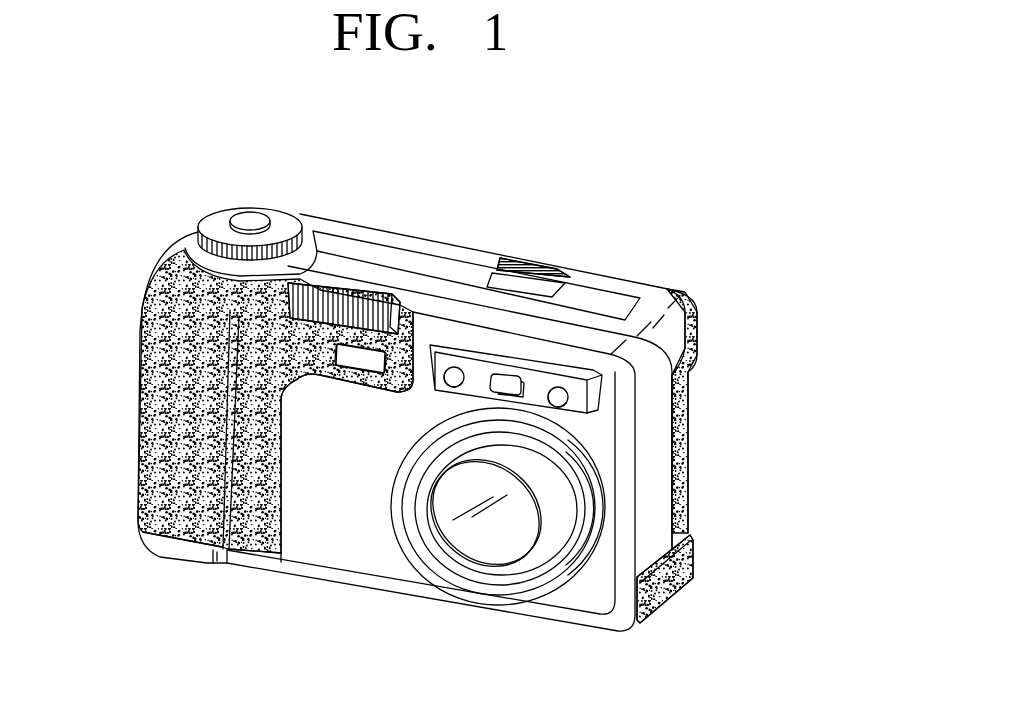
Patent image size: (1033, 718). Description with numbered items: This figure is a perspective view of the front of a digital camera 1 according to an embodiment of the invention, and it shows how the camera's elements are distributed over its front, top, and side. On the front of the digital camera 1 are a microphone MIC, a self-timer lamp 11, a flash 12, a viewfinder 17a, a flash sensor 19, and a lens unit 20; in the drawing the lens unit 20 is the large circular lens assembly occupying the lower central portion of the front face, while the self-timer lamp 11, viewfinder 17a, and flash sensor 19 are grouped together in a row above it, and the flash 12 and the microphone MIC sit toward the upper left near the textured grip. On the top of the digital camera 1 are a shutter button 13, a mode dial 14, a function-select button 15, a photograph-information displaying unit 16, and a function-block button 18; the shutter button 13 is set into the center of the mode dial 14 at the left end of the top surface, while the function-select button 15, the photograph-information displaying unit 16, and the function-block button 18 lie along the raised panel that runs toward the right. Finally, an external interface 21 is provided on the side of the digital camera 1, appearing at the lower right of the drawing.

The digital camera 1 is at (685, 189).
The self-timer lamp 11 is at (455, 367).
The flash 12 is at (337, 297).
The shutter button 13 is at (250, 219).
The mode dial 14 is at (214, 224).
The function-select button 15 is at (520, 259).
The photograph-information displaying unit 16 is at (530, 287).
The viewfinder 17a is at (518, 377).
The function-block button 18 is at (548, 355).
The flash sensor 19 is at (568, 394).
The lens unit 20 is at (513, 515).
The external interface 21 is at (683, 563).
The microphone MIC is at (365, 355).